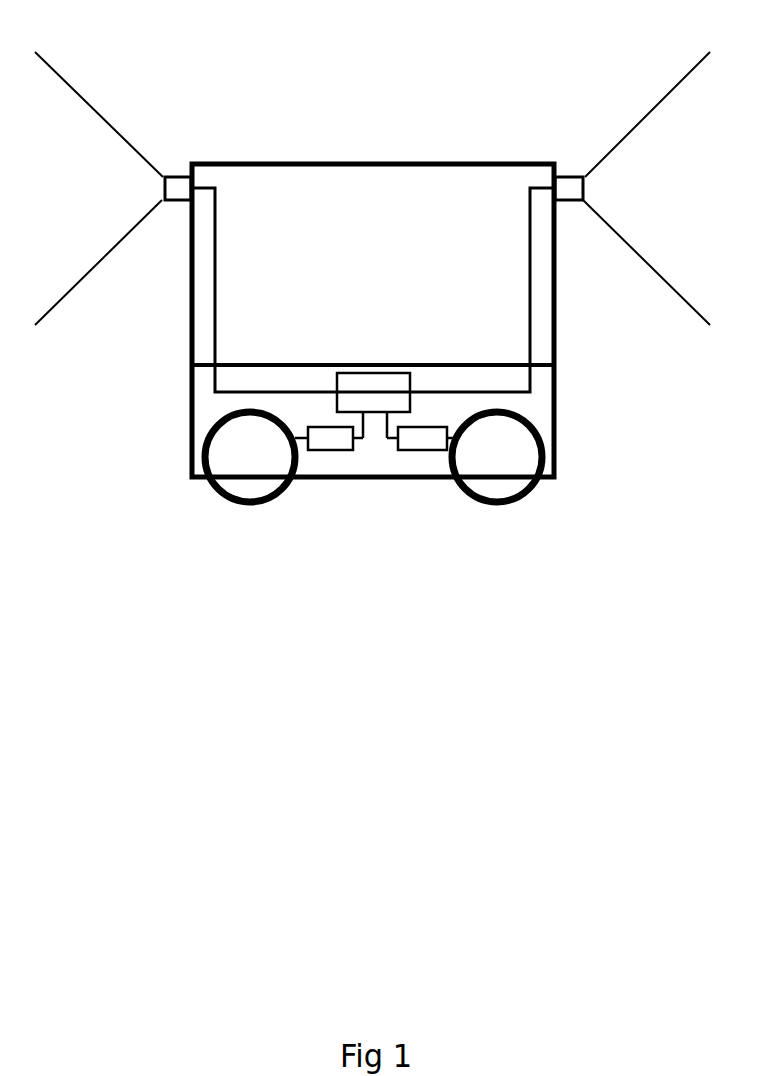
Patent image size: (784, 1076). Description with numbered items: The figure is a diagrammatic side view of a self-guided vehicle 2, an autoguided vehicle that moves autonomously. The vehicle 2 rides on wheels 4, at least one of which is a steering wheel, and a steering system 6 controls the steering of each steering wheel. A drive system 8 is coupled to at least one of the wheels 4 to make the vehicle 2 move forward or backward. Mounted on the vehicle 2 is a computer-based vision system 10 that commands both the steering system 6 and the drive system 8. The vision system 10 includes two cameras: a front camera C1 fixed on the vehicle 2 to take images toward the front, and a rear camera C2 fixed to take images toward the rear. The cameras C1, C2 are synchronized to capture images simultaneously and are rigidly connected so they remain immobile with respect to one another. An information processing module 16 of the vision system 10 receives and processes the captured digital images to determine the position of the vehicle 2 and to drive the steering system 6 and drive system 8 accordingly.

The vehicle 2 is at (372, 82).
The wheels 4 is at (246, 475).
The steering system 6 is at (334, 440).
The drive system 8 is at (424, 440).
The computer-based vision system 10 is at (262, 207).
The information processing module 16 is at (380, 391).
The front camera C1 is at (570, 187).
The rear camera C2 is at (180, 187).